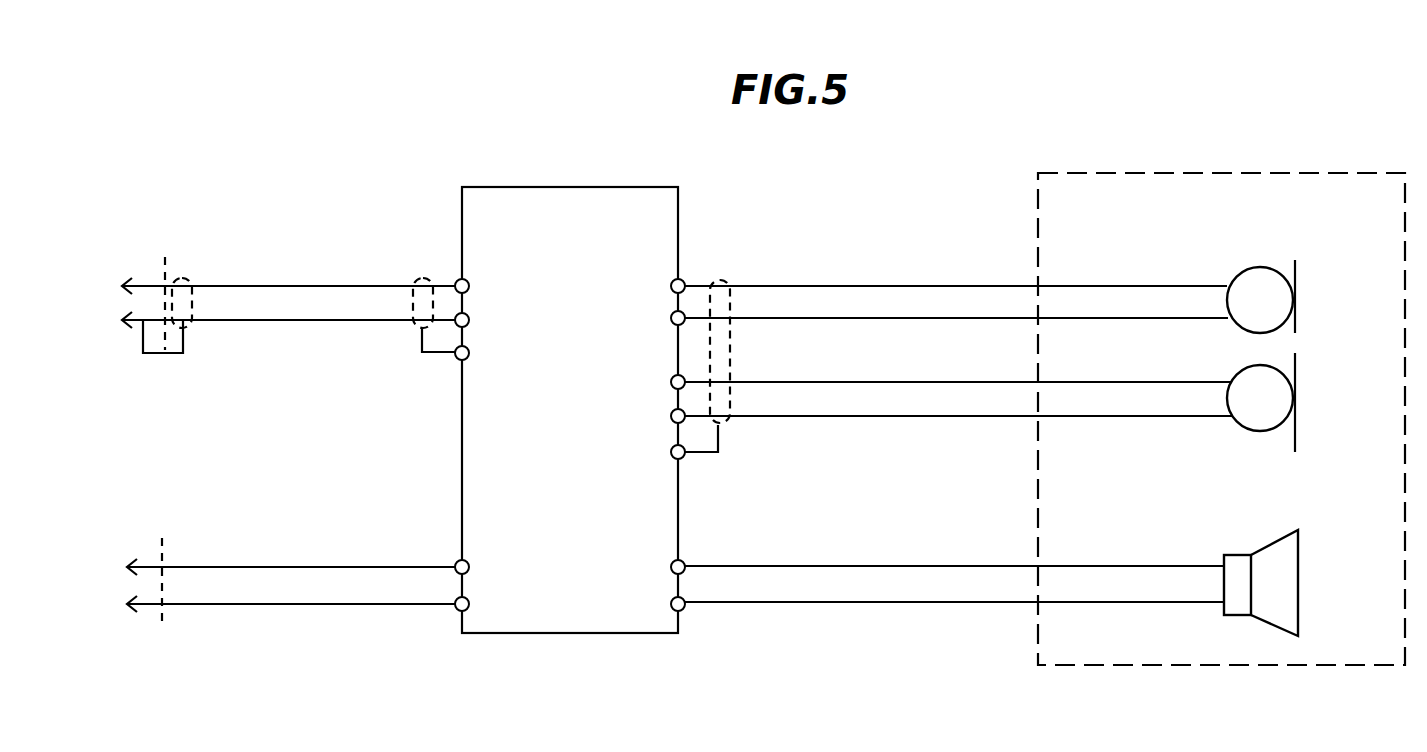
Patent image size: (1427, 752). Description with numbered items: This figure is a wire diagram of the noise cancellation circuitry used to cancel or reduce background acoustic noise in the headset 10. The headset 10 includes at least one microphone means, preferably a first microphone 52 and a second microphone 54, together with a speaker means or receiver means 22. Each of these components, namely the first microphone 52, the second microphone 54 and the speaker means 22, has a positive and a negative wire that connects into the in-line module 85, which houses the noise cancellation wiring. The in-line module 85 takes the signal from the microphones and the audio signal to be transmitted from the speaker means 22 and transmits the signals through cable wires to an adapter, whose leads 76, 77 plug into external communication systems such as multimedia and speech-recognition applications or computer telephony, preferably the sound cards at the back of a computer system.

The headset 10 is at (1110, 205).
The speaker means 22 is at (1280, 620).
The first microphone 52 is at (1258, 292).
The second microphone 54 is at (1275, 400).
The lead 76 is at (960, 566).
The lead 77 is at (967, 283).
The in-line module 85 is at (572, 622).